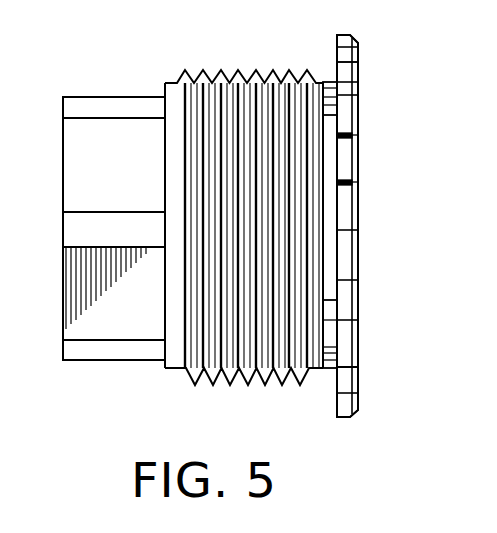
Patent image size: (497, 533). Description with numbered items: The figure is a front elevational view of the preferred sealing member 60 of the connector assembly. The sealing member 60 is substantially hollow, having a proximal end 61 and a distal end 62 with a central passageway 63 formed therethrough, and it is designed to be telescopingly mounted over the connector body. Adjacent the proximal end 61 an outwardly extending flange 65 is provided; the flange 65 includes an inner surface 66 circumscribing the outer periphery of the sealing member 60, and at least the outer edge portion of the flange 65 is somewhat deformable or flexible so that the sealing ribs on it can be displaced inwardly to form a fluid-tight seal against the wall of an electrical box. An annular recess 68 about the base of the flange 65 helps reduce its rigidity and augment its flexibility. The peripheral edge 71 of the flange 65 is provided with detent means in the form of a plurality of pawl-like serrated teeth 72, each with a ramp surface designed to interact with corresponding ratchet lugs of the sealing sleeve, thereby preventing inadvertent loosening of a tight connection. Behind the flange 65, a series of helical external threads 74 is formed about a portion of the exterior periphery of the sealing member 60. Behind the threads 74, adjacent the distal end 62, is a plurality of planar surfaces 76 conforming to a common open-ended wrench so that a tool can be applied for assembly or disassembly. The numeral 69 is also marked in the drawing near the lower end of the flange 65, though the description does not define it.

The sealing member 60 is at (115, 68).
The proximal end 61 is at (368, 90).
The distal end 62 is at (50, 179).
The central passageway 63 is at (484, 252).
The flange 65 is at (368, 46).
The inner surface 66 is at (358, 371).
The annular recess 68 is at (332, 90).
The lower end of flange 69 is at (337, 403).
The peripheral edge 71 is at (398, 305).
The serrated teeth 72 is at (344, 204).
The external threads 74 is at (221, 70).
The planar surfaces 76 is at (118, 182).